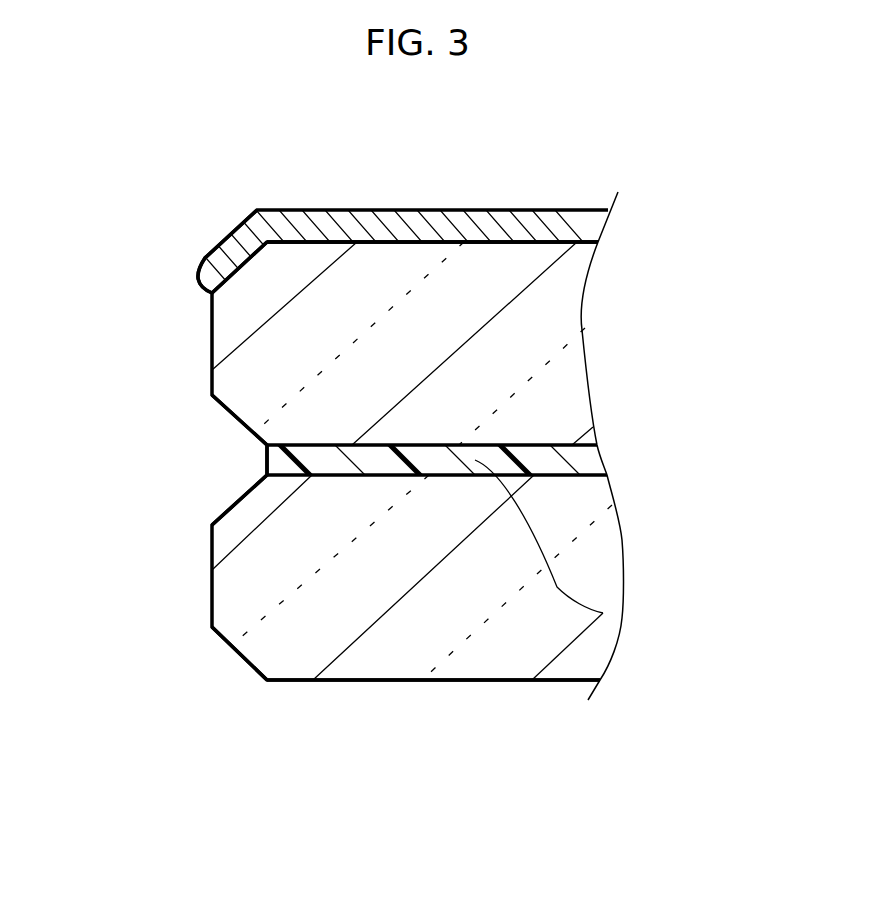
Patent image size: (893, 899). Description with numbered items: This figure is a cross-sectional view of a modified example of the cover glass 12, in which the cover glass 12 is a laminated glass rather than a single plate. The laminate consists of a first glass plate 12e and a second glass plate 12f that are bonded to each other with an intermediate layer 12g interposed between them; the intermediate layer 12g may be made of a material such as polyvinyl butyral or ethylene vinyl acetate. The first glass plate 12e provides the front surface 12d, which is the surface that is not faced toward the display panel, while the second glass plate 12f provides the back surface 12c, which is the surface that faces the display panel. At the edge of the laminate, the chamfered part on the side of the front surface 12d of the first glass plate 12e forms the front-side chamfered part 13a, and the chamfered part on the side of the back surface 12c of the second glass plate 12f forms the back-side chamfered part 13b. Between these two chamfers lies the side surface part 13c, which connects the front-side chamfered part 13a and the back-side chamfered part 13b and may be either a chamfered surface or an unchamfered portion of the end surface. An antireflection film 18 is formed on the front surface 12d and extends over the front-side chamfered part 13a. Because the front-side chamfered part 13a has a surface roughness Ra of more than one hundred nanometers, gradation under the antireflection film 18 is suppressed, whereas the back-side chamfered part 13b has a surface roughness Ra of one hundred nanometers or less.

The cover glass 12 is at (605, 341).
The back surface 12c is at (417, 682).
The front surface 12d is at (386, 243).
The first glass plate 12e is at (562, 372).
The second glass plate 12f is at (598, 540).
The intermediate layer 12g is at (603, 613).
The front-side chamfered part 13a is at (234, 246).
The back-side chamfered part 13b is at (242, 658).
The side surface part 13c is at (208, 578).
The antireflection film 18 is at (513, 224).